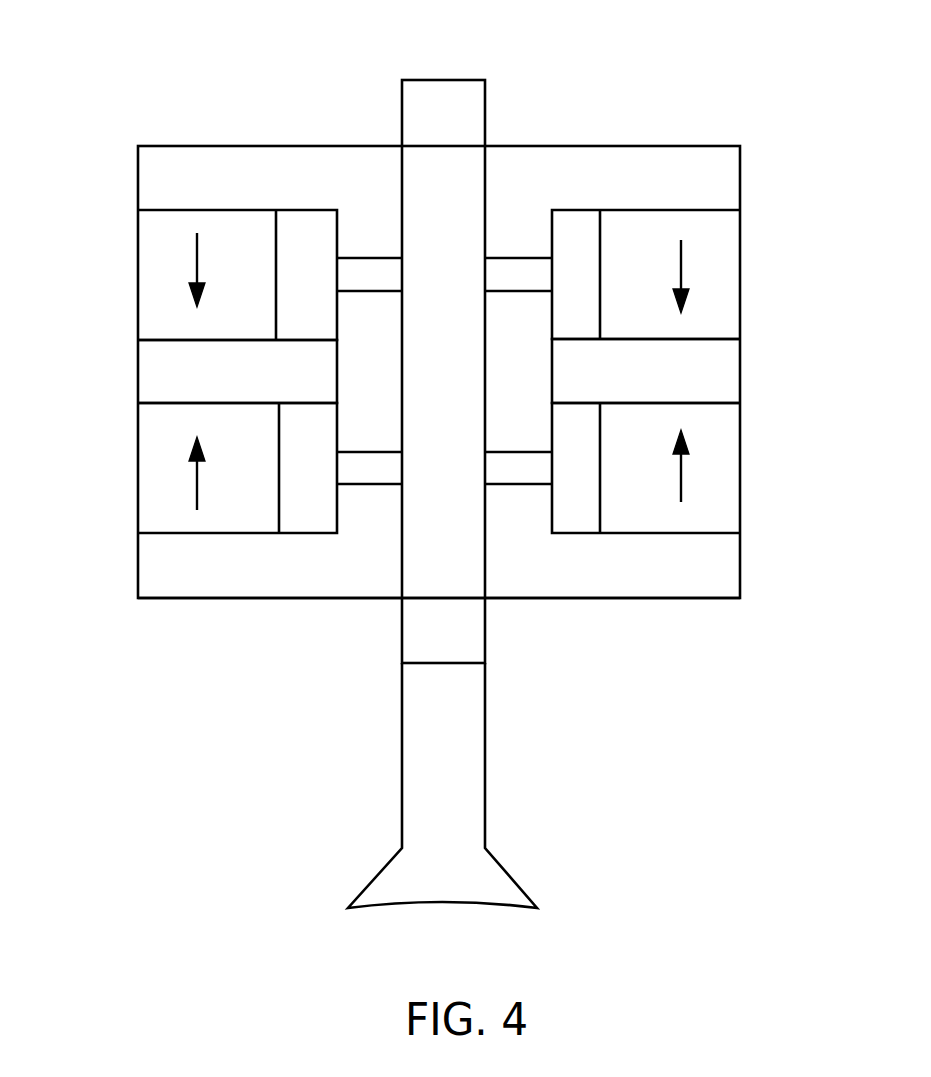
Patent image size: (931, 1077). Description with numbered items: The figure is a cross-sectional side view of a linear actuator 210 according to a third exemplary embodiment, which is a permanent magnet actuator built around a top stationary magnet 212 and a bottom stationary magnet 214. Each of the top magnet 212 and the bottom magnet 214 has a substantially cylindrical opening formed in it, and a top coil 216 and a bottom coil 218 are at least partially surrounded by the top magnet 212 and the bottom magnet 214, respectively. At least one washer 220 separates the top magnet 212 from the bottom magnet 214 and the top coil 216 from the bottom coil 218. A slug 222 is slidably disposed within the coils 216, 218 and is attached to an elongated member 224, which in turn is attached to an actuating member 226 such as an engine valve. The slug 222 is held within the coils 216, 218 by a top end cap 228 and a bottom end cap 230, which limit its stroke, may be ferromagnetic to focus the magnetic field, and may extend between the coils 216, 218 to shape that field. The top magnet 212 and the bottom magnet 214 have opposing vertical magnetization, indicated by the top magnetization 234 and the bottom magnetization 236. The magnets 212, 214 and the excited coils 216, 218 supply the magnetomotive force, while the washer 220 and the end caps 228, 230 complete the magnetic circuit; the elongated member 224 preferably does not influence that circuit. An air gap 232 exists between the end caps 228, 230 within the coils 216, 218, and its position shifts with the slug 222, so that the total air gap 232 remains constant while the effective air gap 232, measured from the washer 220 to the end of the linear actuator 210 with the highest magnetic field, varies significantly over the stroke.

The linear actuator 210 is at (152, 98).
The top stationary magnet 212 is at (138, 243).
The bottom stationary magnet 214 is at (138, 436).
The top coil 216 is at (300, 210).
The bottom coil 218 is at (279, 470).
The washer 220 is at (138, 370).
The slug 222 is at (373, 291).
The elongated member 224 is at (433, 80).
The actuating member 226 is at (485, 770).
The top end cap 228 is at (520, 146).
The bottom end cap 230 is at (578, 598).
The air gap 232 is at (388, 485).
The top magnetization 234 is at (197, 274).
The bottom magnetization 236 is at (197, 485).